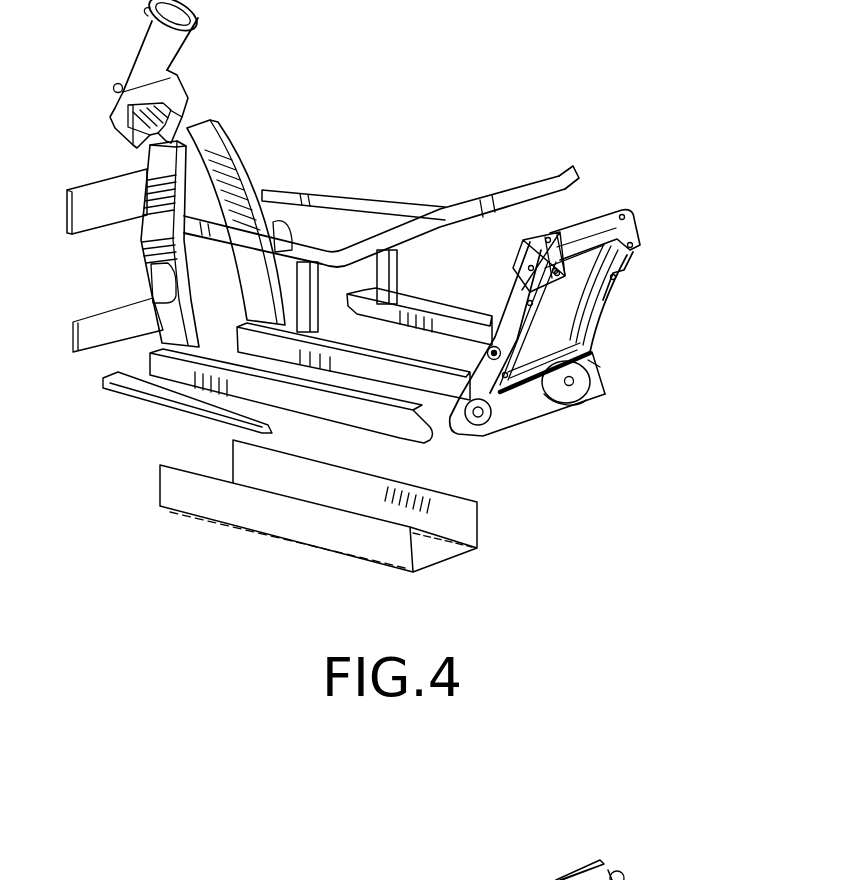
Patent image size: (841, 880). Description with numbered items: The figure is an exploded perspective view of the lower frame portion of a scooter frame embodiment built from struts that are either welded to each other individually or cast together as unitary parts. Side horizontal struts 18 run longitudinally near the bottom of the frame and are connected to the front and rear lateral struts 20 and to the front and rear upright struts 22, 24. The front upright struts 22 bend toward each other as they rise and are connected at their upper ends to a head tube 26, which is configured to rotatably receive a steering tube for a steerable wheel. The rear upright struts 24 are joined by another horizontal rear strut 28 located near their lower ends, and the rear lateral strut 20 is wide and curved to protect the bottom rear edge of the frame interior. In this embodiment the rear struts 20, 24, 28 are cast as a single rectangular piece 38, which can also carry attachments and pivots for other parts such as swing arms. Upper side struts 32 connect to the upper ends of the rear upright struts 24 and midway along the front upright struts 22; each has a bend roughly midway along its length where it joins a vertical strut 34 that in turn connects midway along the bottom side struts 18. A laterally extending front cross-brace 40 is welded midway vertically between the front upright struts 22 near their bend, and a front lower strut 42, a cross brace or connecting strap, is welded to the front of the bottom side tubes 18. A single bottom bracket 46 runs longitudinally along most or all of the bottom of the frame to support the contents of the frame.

The side horizontal struts 18 is at (377, 368).
The rear lateral strut 20 is at (568, 398).
The front upright struts 22 is at (145, 235).
The rear upright struts 24 is at (602, 323).
The head tube 26 is at (147, 57).
The horizontal rear strut 28 is at (597, 220).
The upper side struts 32 is at (350, 250).
The vertical strut 34 is at (395, 270).
The single rectangular piece 38 is at (647, 287).
The front cross-brace 40 is at (96, 180).
The front lower strut 42 is at (87, 337).
The bottom bracket 46 is at (250, 515).